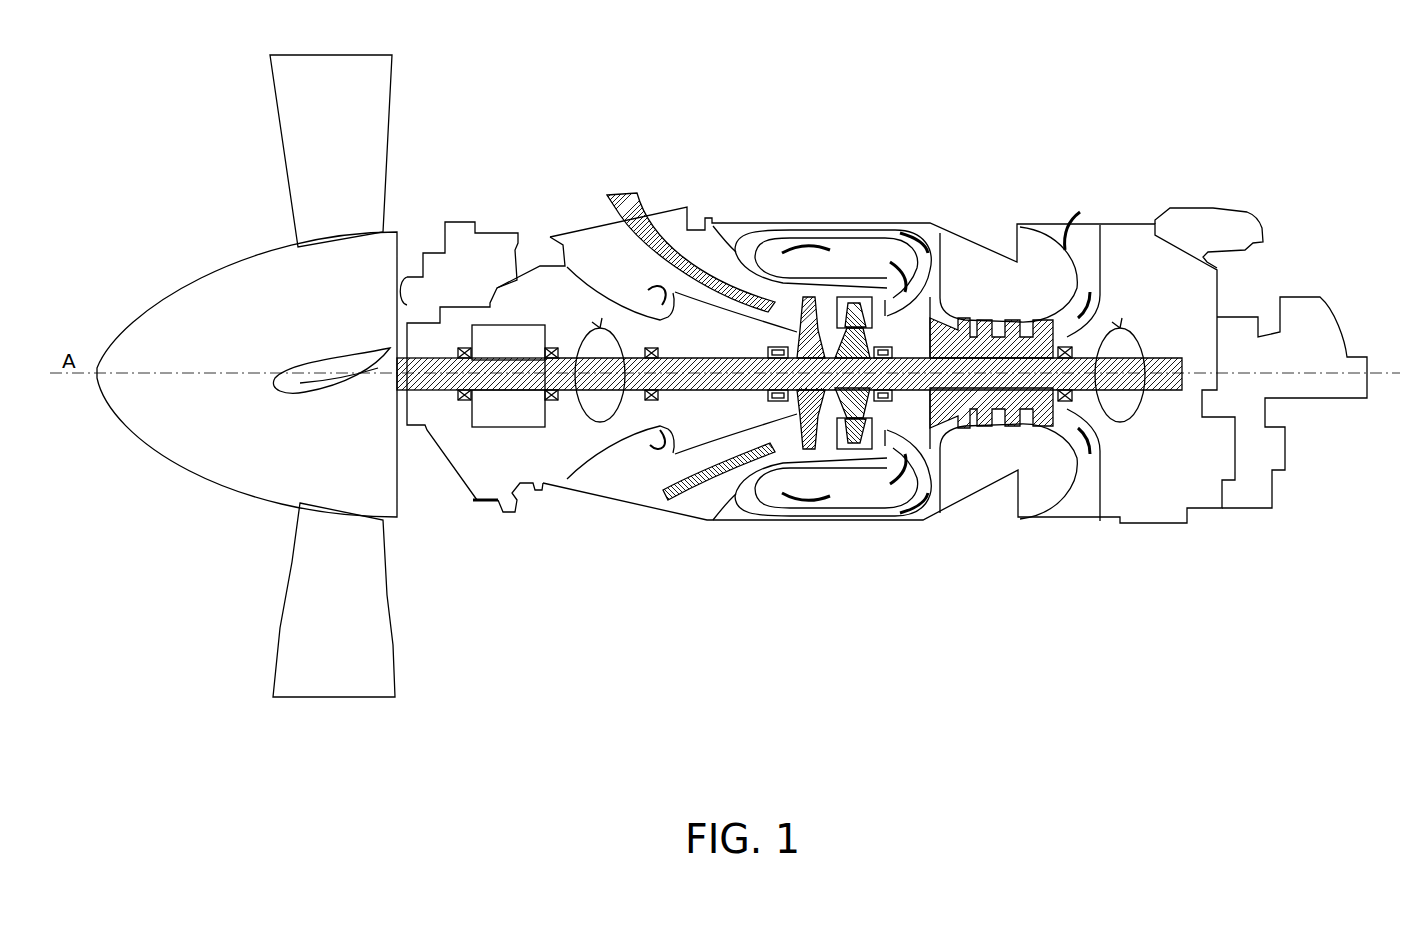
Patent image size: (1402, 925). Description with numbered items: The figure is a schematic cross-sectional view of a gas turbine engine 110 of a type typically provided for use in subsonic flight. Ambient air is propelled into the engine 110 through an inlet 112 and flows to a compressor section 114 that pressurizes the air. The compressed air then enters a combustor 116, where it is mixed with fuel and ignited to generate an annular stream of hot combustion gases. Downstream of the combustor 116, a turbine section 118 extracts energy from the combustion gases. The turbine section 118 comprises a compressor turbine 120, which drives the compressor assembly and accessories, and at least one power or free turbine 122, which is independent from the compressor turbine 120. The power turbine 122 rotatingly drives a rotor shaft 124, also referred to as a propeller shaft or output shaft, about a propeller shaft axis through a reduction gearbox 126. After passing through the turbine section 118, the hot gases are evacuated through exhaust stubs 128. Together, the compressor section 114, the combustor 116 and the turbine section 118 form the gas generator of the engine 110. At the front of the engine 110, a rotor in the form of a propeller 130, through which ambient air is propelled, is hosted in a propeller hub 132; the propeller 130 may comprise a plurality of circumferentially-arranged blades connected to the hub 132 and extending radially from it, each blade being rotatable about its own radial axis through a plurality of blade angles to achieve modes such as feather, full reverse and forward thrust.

The gas turbine engine 110 is at (746, 134).
The inlet 112 is at (1081, 208).
The compressor section 114 is at (972, 262).
The combustor 116 is at (862, 255).
The turbine section 118 is at (835, 380).
The compressor turbine 120 is at (835, 373).
The power or free turbine 122 is at (800, 372).
The rotor shaft 124 is at (525, 413).
The reduction gearbox 126 is at (507, 362).
The exhaust stubs 128 is at (604, 203).
The propeller 130 is at (300, 123).
The propeller hub 132 is at (225, 290).